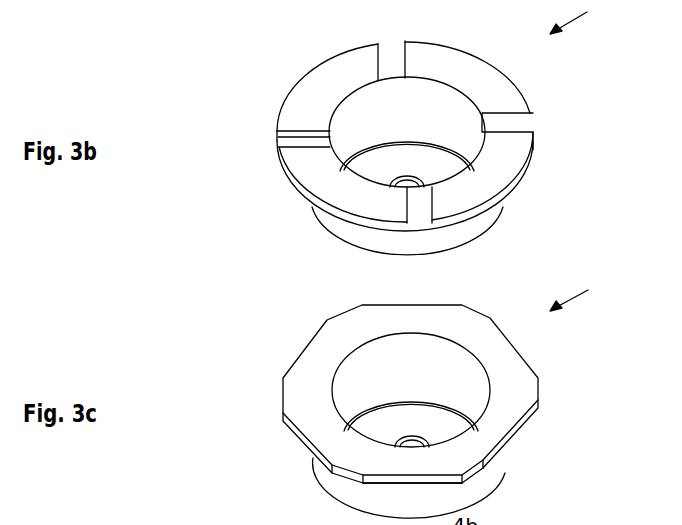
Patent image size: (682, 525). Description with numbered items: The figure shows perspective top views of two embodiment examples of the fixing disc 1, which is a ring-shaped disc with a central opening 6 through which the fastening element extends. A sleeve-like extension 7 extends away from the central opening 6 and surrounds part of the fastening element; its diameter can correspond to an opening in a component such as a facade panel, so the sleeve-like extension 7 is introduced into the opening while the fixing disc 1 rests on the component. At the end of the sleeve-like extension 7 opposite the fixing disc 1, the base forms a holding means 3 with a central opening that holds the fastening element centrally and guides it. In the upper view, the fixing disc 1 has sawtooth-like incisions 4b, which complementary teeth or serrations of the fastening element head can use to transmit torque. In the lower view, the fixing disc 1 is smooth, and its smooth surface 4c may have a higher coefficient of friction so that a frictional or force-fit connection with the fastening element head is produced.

In FIG. 3c, the fixing disc 1 is at (584, 390).
In FIG. 3b, the holding means 3 is at (322, 225).
In FIG. 3c, the holding means 3 is at (333, 490).
In FIG. 3b, the sawtooth-like incisions 4b is at (393, 50).
In FIG. 3c, the smooth surface 4c is at (526, 390).
In FIG. 3b, the central opening 6 is at (335, 107).
In FIG. 3c, the central opening 6 is at (340, 365).
In FIG. 3b, the sleeve-like extension 7 is at (480, 225).
In FIG. 3c, the sleeve-like extension 7 is at (487, 482).